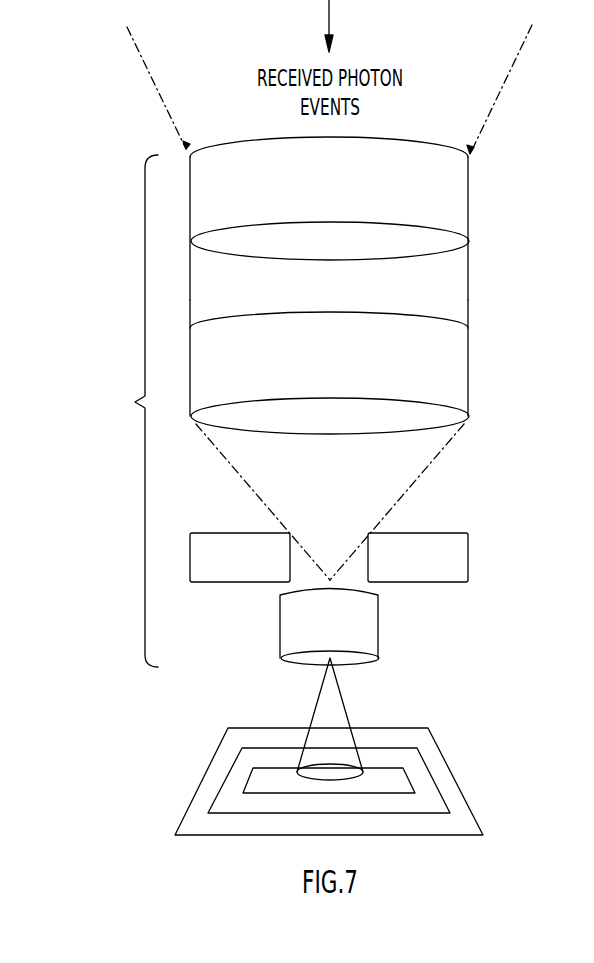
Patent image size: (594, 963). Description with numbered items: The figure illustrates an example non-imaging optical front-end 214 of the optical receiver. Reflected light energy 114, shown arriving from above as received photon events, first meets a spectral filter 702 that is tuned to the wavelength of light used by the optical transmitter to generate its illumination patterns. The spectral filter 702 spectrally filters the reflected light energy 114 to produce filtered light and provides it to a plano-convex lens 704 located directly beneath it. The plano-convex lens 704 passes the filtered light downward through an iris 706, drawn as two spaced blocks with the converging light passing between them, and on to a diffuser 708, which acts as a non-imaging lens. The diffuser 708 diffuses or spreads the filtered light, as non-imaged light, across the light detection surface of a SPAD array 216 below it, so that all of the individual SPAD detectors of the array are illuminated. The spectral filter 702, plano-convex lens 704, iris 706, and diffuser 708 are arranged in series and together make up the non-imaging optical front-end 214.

The reflected light energy 114 is at (330, 12).
The non-imaging optical front-end 214 is at (312, 402).
The spectral filter 702 is at (468, 220).
The plano-convex lens 704 is at (468, 395).
The iris 706 is at (468, 543).
The diffuser 708 is at (378, 627).
The SPAD array 216 is at (465, 795).